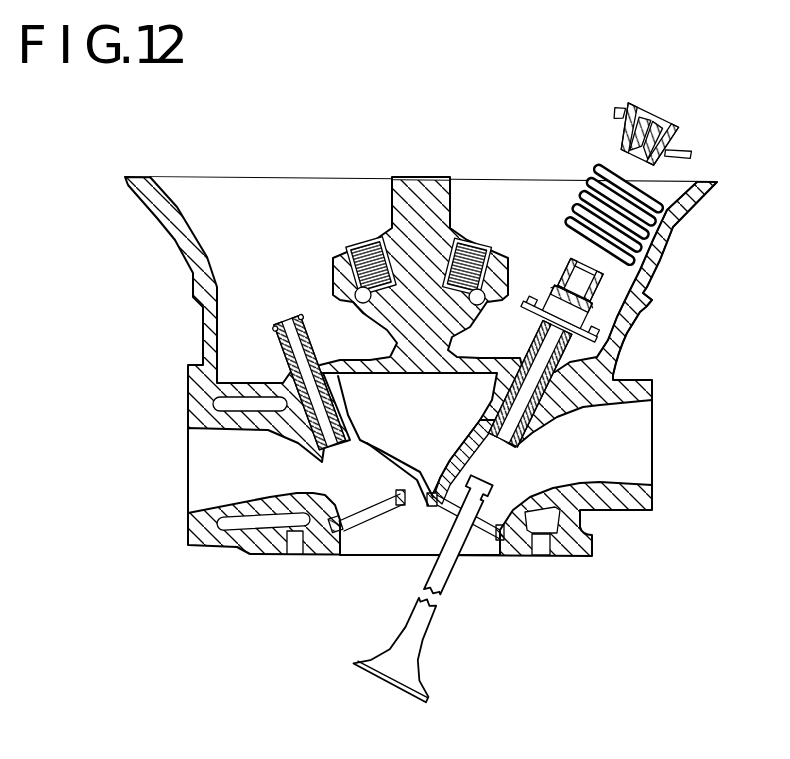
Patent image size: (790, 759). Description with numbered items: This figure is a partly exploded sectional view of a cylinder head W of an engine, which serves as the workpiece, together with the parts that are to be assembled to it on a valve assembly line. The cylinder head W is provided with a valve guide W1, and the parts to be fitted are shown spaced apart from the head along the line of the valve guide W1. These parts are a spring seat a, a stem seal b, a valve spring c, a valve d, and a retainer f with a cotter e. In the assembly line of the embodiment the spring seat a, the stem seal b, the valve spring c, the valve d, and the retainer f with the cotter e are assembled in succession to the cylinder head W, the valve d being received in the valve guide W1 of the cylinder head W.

The cotter e is at (662, 130).
The retainer f is at (675, 153).
The cylinder head W is at (693, 203).
The valve spring c is at (663, 234).
The stem seal b is at (600, 285).
The spring seat a is at (590, 330).
The valve guide W1 is at (563, 363).
The valve d is at (403, 662).